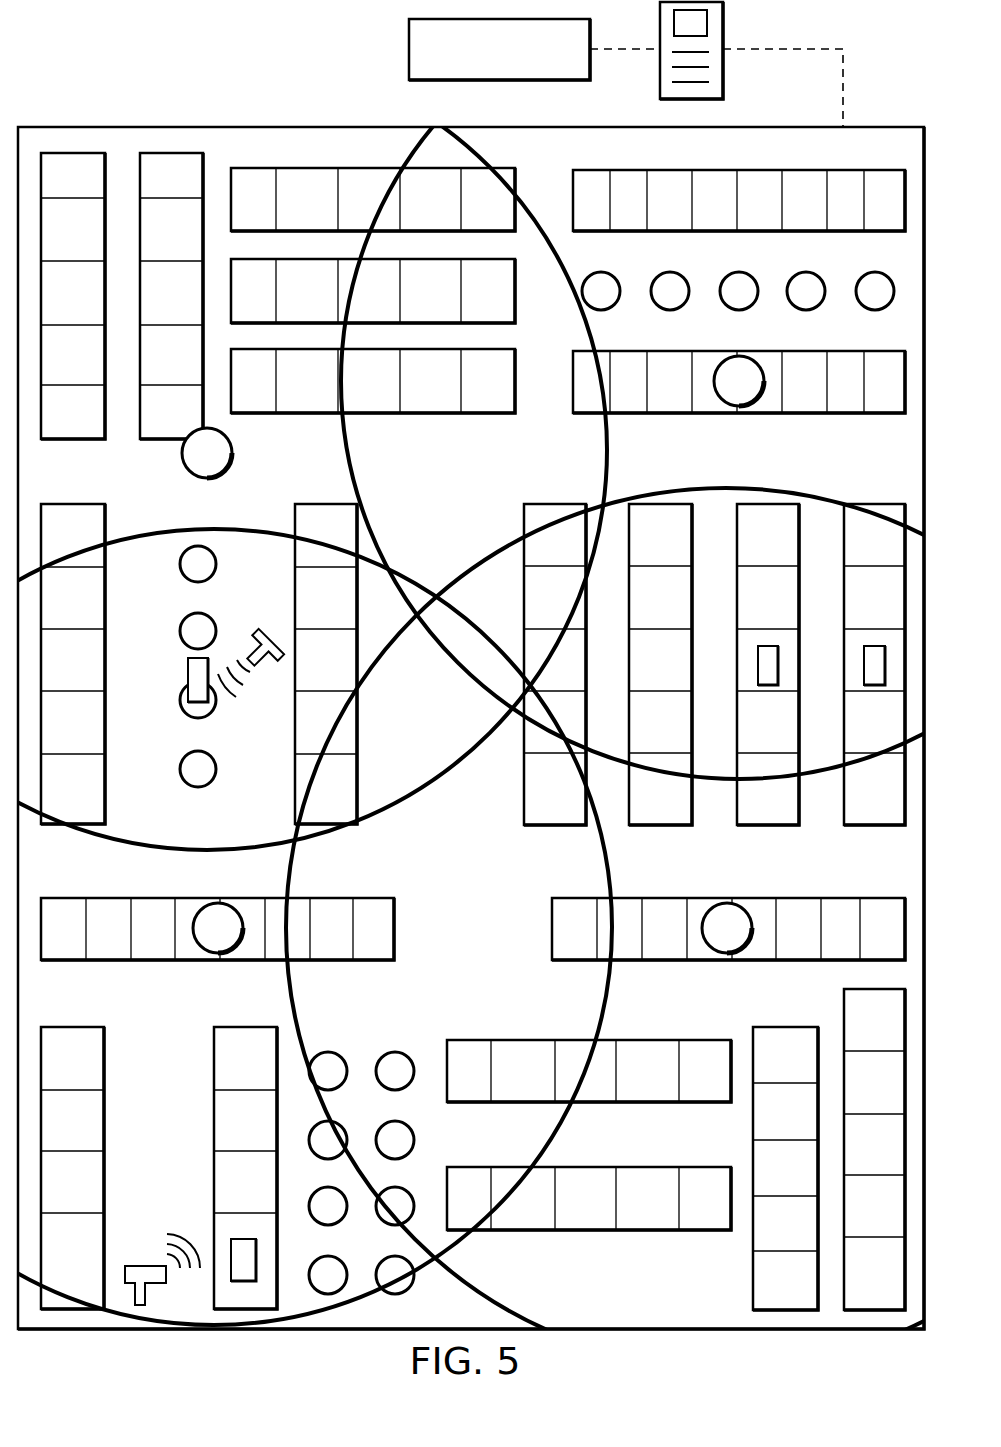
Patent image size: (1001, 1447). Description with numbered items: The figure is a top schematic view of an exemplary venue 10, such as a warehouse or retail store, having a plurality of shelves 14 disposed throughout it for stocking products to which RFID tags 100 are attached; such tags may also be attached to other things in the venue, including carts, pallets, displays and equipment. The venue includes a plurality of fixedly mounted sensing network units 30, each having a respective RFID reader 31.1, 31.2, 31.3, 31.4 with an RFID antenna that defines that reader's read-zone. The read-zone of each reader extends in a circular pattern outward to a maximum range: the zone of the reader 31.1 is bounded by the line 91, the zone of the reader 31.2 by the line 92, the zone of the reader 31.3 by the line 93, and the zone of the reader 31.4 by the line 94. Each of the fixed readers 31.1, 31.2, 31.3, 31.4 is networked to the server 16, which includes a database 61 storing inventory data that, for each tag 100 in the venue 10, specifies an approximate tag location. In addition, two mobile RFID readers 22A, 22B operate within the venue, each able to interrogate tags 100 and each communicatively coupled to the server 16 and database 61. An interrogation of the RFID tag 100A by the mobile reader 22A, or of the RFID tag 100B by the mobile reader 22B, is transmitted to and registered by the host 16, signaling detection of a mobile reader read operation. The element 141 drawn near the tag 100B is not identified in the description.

The venue 10 is at (125, 59).
The database 61 is at (409, 49).
The server 16 is at (660, 26).
The shelving structure 14 is at (769, 827).
The sensing network unit 30 is at (478, 666).
The RFID reader 31.1 is at (242, 461).
The RFID reader 31.2 is at (759, 357).
The RFID reader 31.3 is at (203, 906).
The RFID reader 31.4 is at (713, 905).
The line 91 is at (603, 463).
The line 92 is at (353, 466).
The line 93 is at (468, 1246).
The line 94 is at (397, 807).
The RFID tag 100 is at (768, 686).
The RFID tag 100A is at (253, 1239).
The RFID tag 100B is at (187, 663).
The tagged container 141 is at (183, 708).
The mobile RFID reader 22A is at (144, 1266).
The mobile RFID reader 22B is at (268, 662).